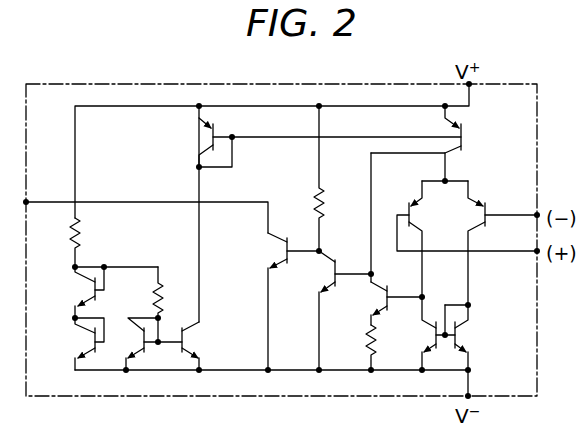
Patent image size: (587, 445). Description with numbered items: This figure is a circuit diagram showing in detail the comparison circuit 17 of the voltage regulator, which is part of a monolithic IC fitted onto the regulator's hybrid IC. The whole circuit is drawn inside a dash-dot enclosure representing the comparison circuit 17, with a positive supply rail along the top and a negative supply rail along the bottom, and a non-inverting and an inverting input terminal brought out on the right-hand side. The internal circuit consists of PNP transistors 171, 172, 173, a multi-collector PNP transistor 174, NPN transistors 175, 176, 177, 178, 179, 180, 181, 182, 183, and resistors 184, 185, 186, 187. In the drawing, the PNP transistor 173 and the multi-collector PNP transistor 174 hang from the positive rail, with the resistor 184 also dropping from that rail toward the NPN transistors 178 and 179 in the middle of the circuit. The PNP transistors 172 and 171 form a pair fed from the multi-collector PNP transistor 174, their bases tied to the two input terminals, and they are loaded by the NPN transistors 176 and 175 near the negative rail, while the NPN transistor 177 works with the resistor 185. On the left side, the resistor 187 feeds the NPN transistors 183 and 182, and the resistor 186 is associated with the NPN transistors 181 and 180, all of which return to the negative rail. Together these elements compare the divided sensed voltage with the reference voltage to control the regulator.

The comparison circuit 17 is at (160, 397).
The PNP transistor 171 is at (476, 204).
The PNP transistor 172 is at (418, 204).
The PNP transistor 173 is at (198, 136).
The multi-collector PNP transistor 174 is at (464, 143).
The NPN transistor 175 is at (461, 336).
The NPN transistor 176 is at (432, 340).
The NPN transistor 177 is at (385, 297).
The NPN transistor 178 is at (326, 275).
The NPN transistor 179 is at (267, 257).
The NPN transistor 180 is at (196, 338).
The NPN transistor 181 is at (130, 348).
The NPN transistor 182 is at (85, 345).
The NPN transistor 183 is at (90, 291).
The resistor 184 is at (313, 190).
The resistor 185 is at (367, 331).
The resistor 186 is at (157, 295).
The resistor 187 is at (83, 228).